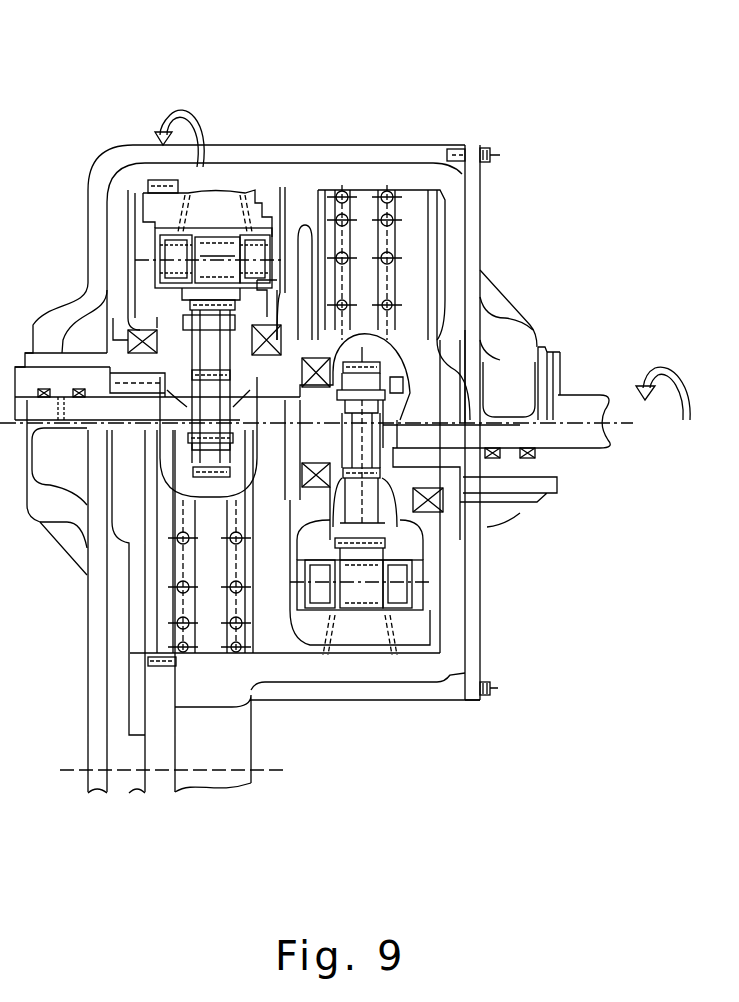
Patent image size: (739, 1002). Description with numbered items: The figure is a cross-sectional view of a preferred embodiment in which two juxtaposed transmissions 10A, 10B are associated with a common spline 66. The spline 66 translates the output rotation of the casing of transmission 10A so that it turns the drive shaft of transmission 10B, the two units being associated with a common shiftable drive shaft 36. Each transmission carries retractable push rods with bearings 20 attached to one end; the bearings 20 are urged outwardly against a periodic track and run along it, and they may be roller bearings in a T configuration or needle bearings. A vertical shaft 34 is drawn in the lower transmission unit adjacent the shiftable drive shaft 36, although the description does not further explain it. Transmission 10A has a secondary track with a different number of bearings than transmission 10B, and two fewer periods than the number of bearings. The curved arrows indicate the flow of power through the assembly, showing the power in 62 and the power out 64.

The transmission 10A is at (353, 180).
The transmission 10B is at (214, 188).
The bearings 20 is at (252, 255).
The pinion shaft 34 is at (362, 438).
The shiftable drive shaft 36 is at (580, 410).
The power in 62 is at (666, 415).
The power out 64 is at (175, 72).
The spline 66 is at (290, 392).